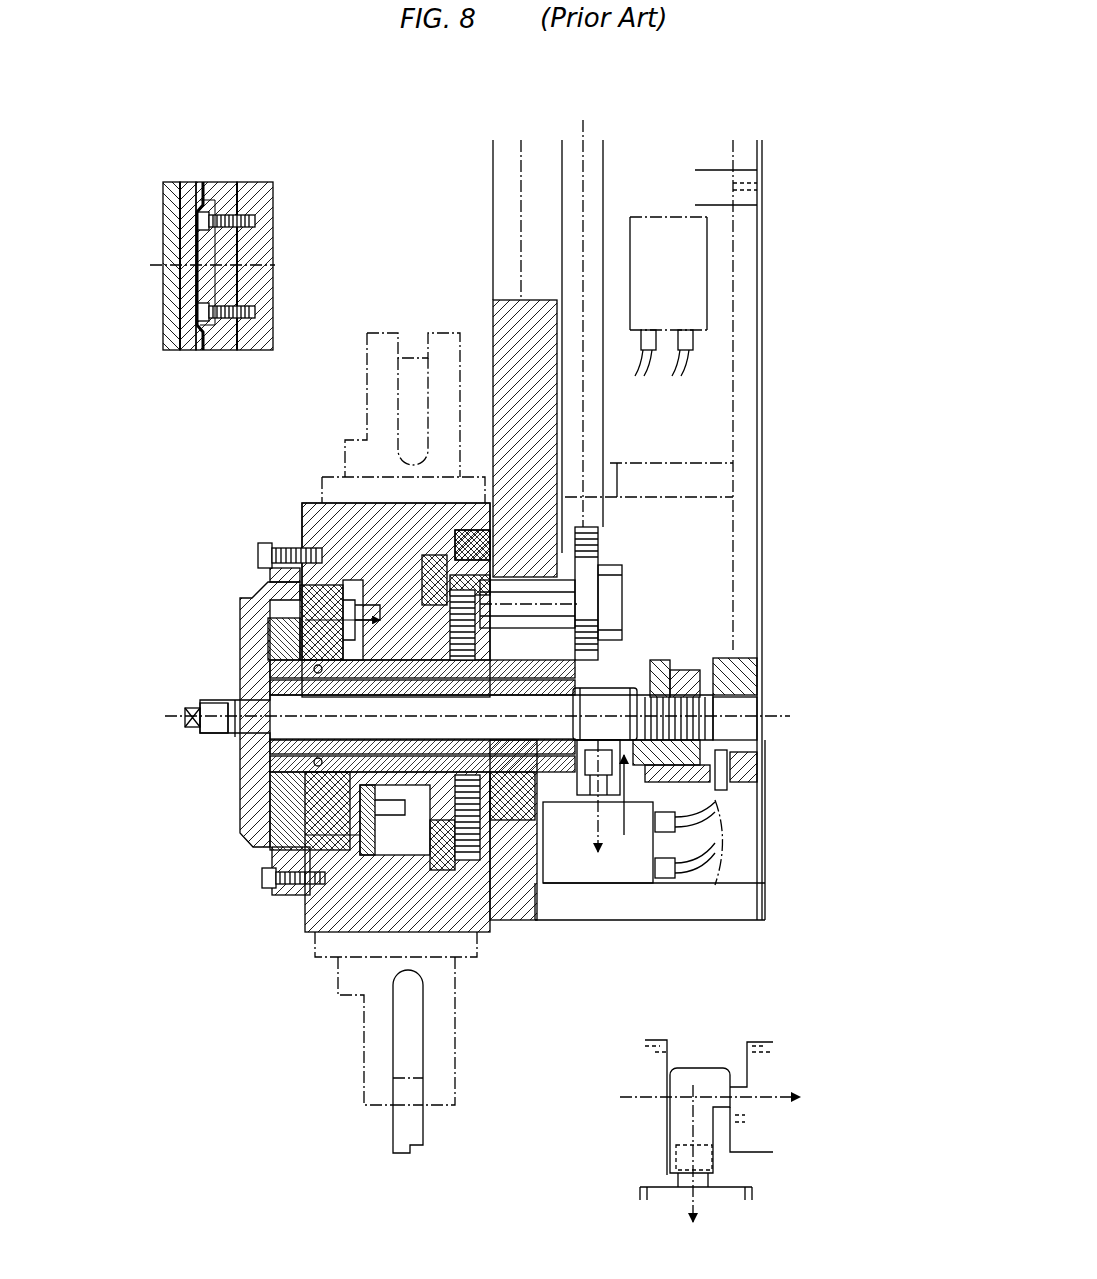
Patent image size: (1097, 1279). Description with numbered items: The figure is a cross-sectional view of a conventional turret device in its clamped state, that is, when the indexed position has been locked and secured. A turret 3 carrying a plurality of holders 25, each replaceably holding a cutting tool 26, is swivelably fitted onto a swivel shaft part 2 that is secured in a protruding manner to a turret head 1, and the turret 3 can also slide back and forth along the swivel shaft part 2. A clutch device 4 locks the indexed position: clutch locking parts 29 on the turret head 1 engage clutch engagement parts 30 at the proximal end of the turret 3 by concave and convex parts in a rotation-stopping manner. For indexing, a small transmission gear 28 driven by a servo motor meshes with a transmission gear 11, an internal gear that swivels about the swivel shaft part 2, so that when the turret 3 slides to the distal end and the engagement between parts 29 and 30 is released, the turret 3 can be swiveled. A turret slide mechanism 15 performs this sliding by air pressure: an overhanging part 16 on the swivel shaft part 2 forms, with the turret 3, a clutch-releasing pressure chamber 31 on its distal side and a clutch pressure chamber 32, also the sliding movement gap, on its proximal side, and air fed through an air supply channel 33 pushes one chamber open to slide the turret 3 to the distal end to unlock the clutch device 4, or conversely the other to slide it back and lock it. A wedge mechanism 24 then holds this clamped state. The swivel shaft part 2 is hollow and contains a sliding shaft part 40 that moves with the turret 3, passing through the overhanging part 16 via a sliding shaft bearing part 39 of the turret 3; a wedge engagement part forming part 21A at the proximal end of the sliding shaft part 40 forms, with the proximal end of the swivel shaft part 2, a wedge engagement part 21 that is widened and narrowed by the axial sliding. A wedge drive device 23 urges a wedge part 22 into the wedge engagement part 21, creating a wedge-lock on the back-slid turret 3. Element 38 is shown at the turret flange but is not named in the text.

The turret head 1 is at (262, 208).
The swivel shaft part 2 is at (345, 770).
The turret 3 is at (168, 330).
The clutch device 4 is at (190, 168).
The transmission gear 11 is at (500, 847).
The turret slide mechanism 15 is at (232, 657).
The overhanging part 16 is at (320, 833).
The wedge engagement part 21 is at (737, 1058).
The wedge engagement part forming part 21A is at (672, 661).
The wedge part 22 is at (610, 687).
The wedge drive device 23 is at (635, 868).
The wedge mechanism 24 is at (660, 653).
The holder 25 is at (367, 361).
The cutting tool 26 is at (392, 1135).
The small transmission gear 28 is at (598, 593).
The clutch locking part 29 is at (208, 253).
The clutch engagement part 30 is at (180, 294).
The clutch-releasing pressure chamber 31 is at (300, 612).
The clutch pressure chamber 32 is at (300, 581).
The air supply channel 33 is at (303, 689).
The flange 38 is at (242, 632).
The sliding shaft bearing part 39 is at (228, 742).
The sliding shaft part 40 is at (197, 722).